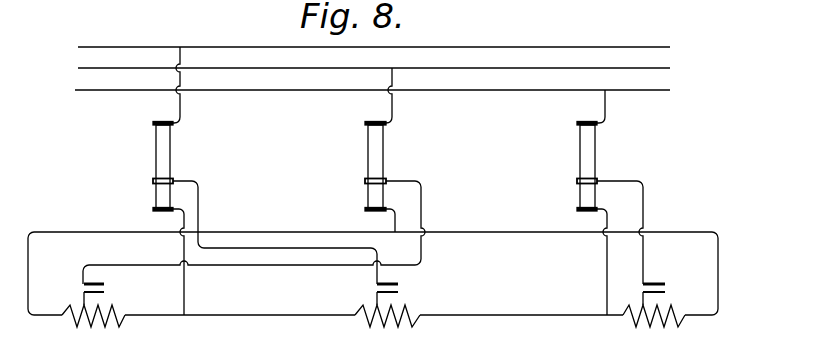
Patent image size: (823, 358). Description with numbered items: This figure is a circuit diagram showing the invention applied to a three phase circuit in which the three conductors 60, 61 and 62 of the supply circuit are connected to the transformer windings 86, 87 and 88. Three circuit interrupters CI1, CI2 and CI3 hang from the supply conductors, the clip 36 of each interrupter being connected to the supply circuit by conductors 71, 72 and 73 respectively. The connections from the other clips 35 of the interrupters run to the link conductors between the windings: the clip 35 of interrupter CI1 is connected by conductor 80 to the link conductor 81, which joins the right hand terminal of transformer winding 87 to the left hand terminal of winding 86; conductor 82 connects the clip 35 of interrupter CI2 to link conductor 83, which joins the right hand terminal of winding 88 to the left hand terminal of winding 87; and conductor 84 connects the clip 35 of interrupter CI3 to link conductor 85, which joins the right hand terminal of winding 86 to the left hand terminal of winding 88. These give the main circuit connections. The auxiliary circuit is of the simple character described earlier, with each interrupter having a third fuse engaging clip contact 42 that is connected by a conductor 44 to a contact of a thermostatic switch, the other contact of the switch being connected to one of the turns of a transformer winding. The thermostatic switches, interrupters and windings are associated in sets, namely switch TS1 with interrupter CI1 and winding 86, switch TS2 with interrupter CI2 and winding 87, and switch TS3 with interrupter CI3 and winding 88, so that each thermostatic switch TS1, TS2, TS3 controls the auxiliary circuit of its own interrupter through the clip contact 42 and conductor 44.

The supply circuit conductor 60 is at (110, 90).
The supply circuit conductor 61 is at (112, 68).
The supply circuit conductor 62 is at (115, 46).
The conductor 71 is at (182, 114).
The conductor 72 is at (393, 110).
The conductor 73 is at (606, 112).
The circuit interrupter CI1 is at (160, 153).
The circuit interrupter CI2 is at (373, 153).
The circuit interrupter CI3 is at (582, 157).
The clip 36 is at (155, 122).
The third fuse engaging clip contact 42 is at (174, 178).
The clip 35 is at (153, 210).
The conductor 44 is at (199, 208).
The conductor 80 is at (183, 250).
The link conductor 81 is at (215, 315).
The conductor 82 is at (396, 224).
The link conductor 83 is at (450, 232).
The conductor 84 is at (606, 263).
The link conductor 85 is at (512, 315).
The transformer winding 86 is at (385, 329).
The transformer winding 87 is at (95, 329).
The transformer winding 88 is at (645, 329).
The thermostatic switch TS1 is at (399, 288).
The thermostatic switch TS2 is at (104, 288).
The thermostatic switch TS3 is at (665, 288).